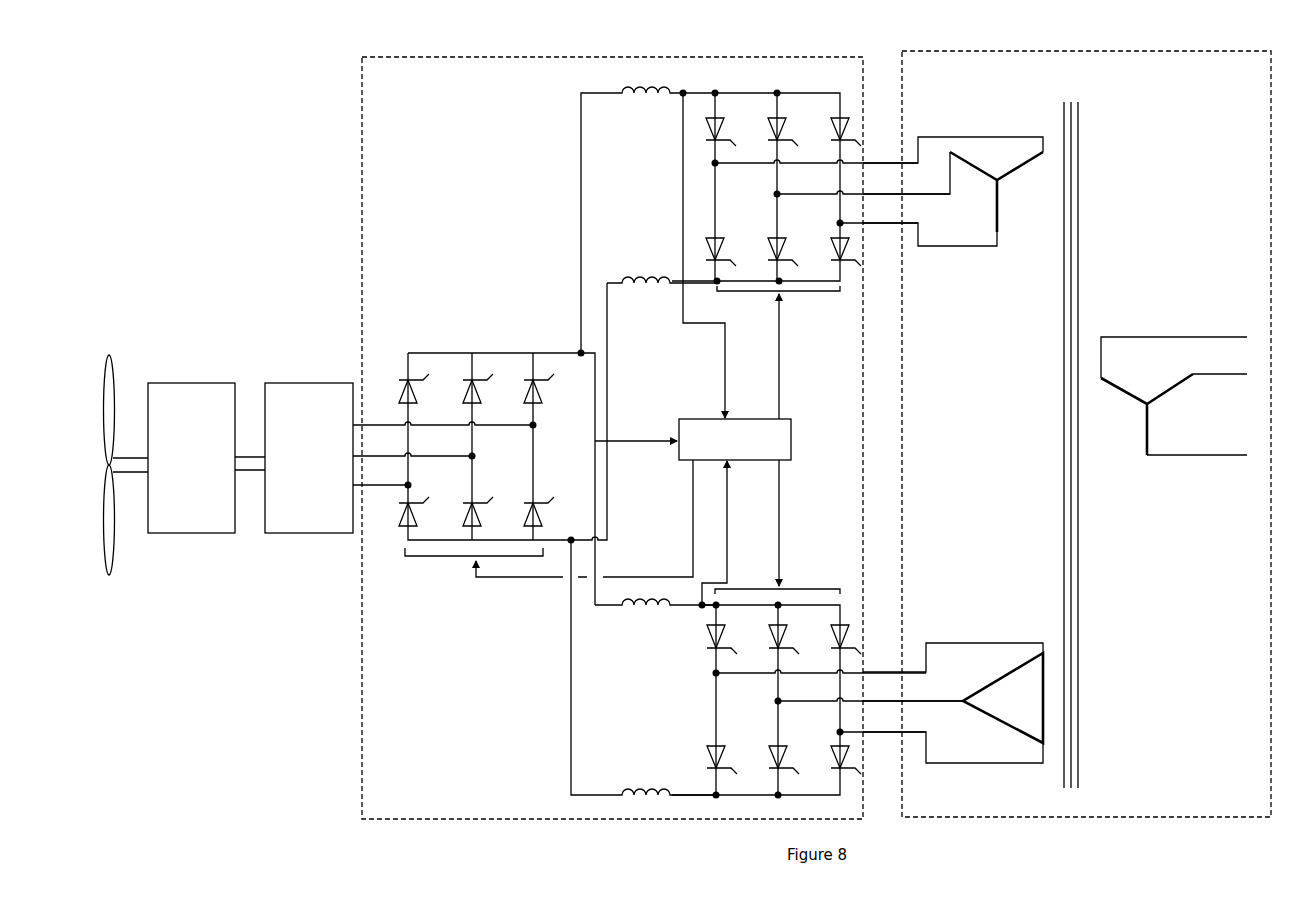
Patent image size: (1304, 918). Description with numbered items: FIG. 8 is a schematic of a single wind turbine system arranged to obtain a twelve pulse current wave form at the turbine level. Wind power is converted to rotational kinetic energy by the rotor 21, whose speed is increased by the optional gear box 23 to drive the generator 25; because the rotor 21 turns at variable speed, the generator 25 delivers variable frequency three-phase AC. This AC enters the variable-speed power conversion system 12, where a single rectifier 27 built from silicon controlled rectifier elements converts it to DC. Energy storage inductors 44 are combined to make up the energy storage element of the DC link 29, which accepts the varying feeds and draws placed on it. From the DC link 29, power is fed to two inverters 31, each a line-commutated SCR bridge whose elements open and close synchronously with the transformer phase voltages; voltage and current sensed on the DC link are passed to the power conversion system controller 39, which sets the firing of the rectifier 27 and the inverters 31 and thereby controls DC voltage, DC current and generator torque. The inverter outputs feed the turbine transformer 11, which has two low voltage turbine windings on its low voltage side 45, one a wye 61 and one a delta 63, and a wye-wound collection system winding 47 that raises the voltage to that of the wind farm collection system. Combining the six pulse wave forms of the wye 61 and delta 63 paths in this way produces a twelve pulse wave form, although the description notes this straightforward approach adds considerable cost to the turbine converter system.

The turbine transformer 11 is at (1271, 51).
The variable-speed power conversion system 12 is at (612, 422).
The rotor 21 is at (104, 466).
The gear box 23 is at (206, 458).
The generator 25 is at (401, 458).
The rectifier 27 is at (465, 353).
The DC link 29 is at (645, 88).
The inverter 31 is at (777, 93).
The power conversion system controller 39 is at (633, 349).
The induction coils 44 is at (645, 106).
The low voltage winding side 45 is at (929, 408).
The collection system winding 47 is at (1174, 270).
The wye winding 61 is at (972, 191).
The delta winding 63 is at (972, 693).